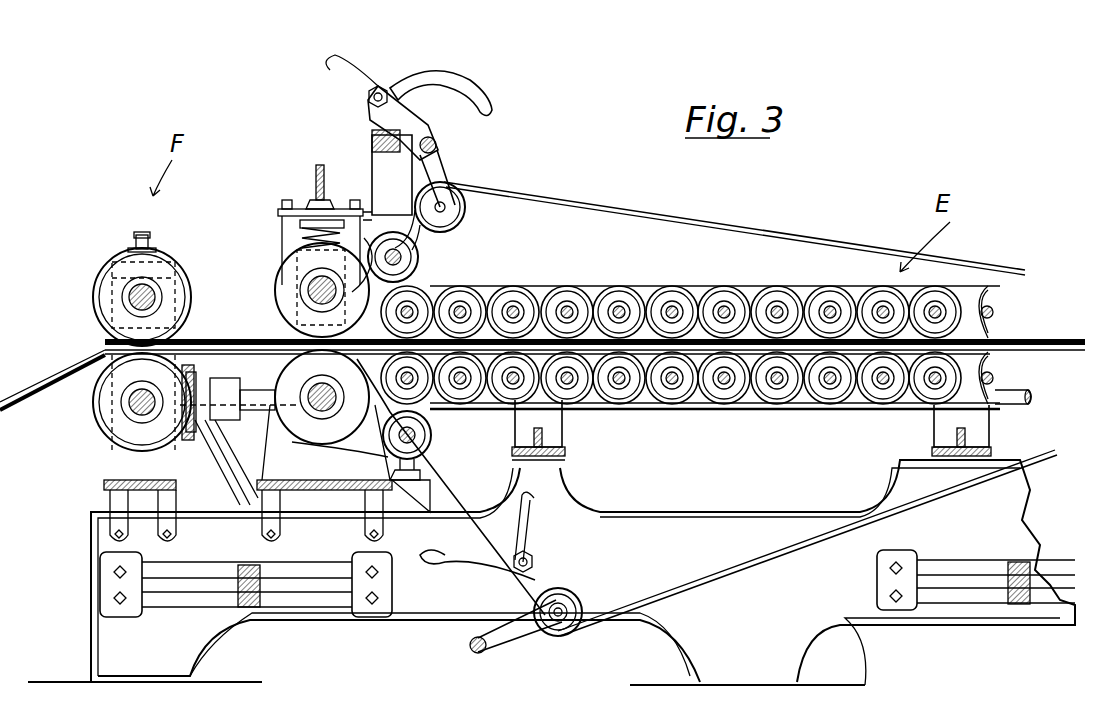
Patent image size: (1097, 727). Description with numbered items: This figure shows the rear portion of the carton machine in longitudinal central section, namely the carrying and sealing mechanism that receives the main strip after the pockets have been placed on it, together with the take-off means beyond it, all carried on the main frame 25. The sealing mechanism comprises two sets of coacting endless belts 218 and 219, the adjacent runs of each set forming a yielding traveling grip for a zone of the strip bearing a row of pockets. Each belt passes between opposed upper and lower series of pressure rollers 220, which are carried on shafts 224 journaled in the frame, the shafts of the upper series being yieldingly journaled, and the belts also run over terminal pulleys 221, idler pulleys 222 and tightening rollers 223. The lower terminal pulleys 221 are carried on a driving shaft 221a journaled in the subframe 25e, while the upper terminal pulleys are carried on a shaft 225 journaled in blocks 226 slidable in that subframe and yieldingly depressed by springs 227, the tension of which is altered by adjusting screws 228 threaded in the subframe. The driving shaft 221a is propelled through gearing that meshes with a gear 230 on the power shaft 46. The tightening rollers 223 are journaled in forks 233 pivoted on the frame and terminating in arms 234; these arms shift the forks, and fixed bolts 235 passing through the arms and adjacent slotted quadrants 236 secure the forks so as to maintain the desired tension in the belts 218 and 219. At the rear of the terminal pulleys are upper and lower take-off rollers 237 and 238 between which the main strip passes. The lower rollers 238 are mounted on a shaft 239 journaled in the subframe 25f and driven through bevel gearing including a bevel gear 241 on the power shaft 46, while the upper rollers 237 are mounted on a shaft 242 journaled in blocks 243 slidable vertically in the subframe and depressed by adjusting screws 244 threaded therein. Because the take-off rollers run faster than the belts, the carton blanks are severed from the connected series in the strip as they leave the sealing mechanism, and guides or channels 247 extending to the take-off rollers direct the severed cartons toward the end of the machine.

The main frame 25 is at (1005, 512).
The subframe 25e is at (277, 492).
The subframe 25f is at (112, 468).
The power shaft 46 is at (1015, 397).
The endless belt 218 is at (750, 232).
The endless belt 219 is at (762, 580).
The pressure roller 220 is at (619, 290).
The terminal pulley 221 is at (292, 278).
The driving shaft 221a is at (262, 430).
The idler pulley 222 is at (410, 262).
The tightening roller 223 is at (460, 208).
The shaft 224 is at (777, 290).
The shaft 225 is at (300, 290).
The block 226 is at (282, 318).
The spring 227 is at (282, 236).
The adjusting screw 228 is at (312, 196).
The gear 230 is at (360, 415).
The fork 233 is at (438, 168).
The arm 234 is at (420, 112).
The fixed bolt 235 is at (378, 86).
The slotted quadrant 236 is at (455, 78).
The upper take-off roller 237 is at (126, 258).
The lower take-off roller 238 is at (108, 440).
The shaft 239 is at (128, 405).
The bevel gear 241 is at (180, 440).
The shaft 242 is at (128, 297).
The block 243 is at (160, 318).
The adjusting screw 244 is at (150, 235).
The guide 247 is at (226, 348).